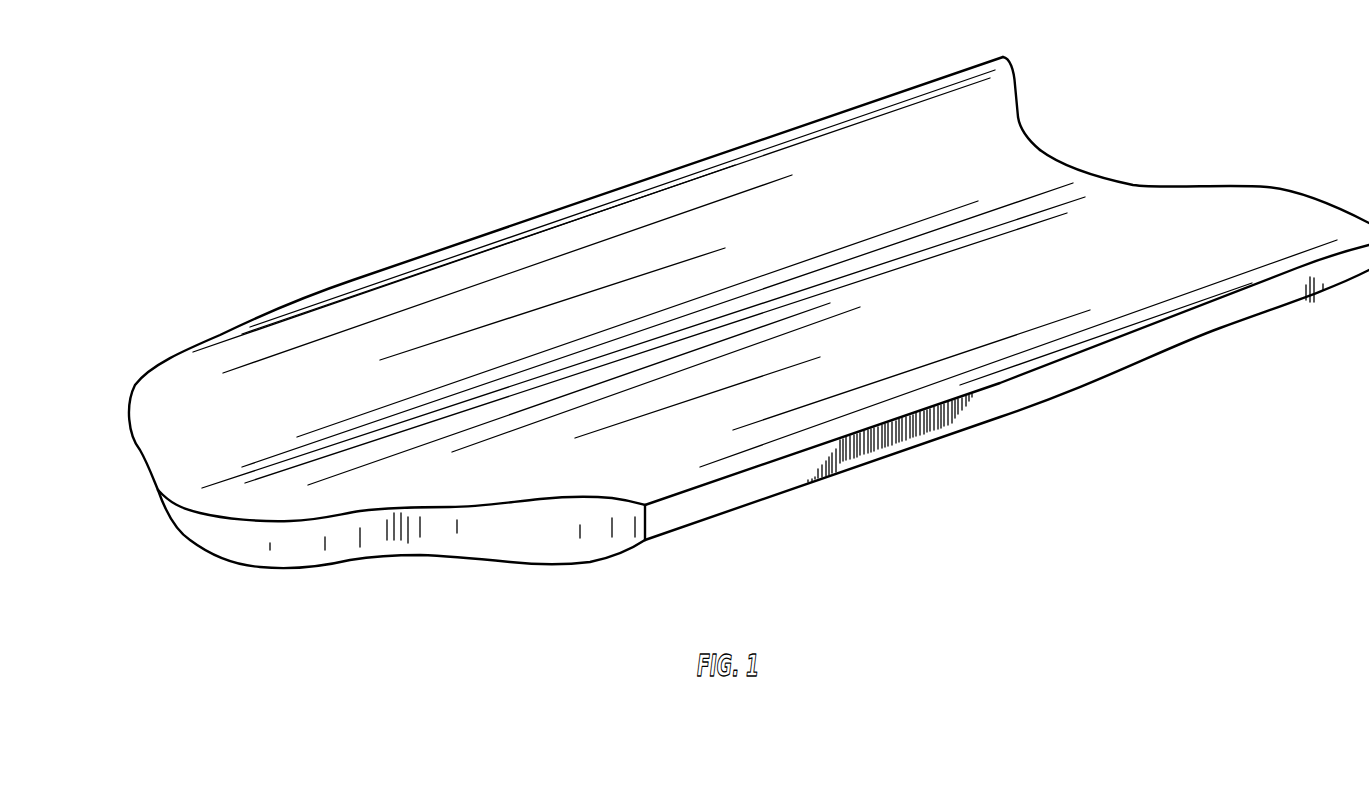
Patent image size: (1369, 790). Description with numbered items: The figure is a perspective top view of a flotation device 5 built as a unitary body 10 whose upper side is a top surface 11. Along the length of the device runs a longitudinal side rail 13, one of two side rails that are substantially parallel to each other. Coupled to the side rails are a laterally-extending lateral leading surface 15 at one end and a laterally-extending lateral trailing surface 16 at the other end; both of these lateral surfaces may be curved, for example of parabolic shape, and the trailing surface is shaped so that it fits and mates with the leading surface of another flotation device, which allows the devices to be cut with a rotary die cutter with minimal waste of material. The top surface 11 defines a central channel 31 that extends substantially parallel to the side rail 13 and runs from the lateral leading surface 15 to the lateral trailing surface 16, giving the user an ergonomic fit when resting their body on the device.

The flotation device 5 is at (318, 176).
The unitary body 10 is at (668, 172).
The top surface 11 is at (442, 315).
The longitudinal side rail 13 is at (805, 457).
The lateral leading surface 15 is at (453, 537).
The lateral trailing surface 16 is at (1098, 168).
The central channel 31 is at (833, 305).